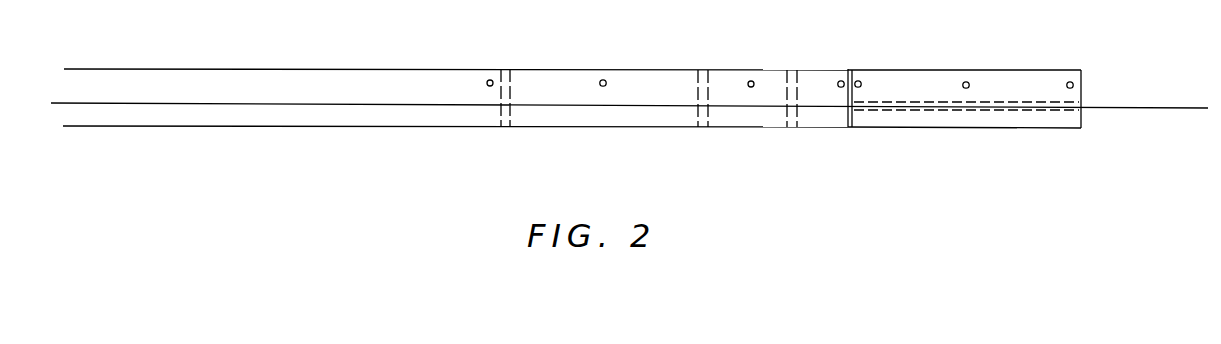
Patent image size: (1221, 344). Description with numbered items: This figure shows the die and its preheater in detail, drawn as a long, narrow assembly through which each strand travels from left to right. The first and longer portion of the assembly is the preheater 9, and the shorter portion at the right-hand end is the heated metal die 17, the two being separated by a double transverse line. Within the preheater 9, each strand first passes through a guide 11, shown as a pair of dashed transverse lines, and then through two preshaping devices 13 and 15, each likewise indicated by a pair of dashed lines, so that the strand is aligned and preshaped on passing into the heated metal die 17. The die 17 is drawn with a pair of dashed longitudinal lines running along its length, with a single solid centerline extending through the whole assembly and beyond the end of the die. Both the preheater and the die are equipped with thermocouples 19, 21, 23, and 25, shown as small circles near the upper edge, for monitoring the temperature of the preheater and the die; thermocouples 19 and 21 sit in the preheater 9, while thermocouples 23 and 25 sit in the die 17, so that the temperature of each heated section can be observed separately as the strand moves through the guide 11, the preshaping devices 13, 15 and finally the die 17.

The preheater 9 is at (473, 126).
The guide 11 is at (500, 69).
The preshaping device 13 is at (700, 70).
The preshaping device 15 is at (783, 70).
The heated metal die 17 is at (993, 128).
The thermocouple 19 is at (603, 80).
The thermocouple 21 is at (841, 81).
The thermocouple 23 is at (858, 81).
The thermocouple 25 is at (1070, 82).